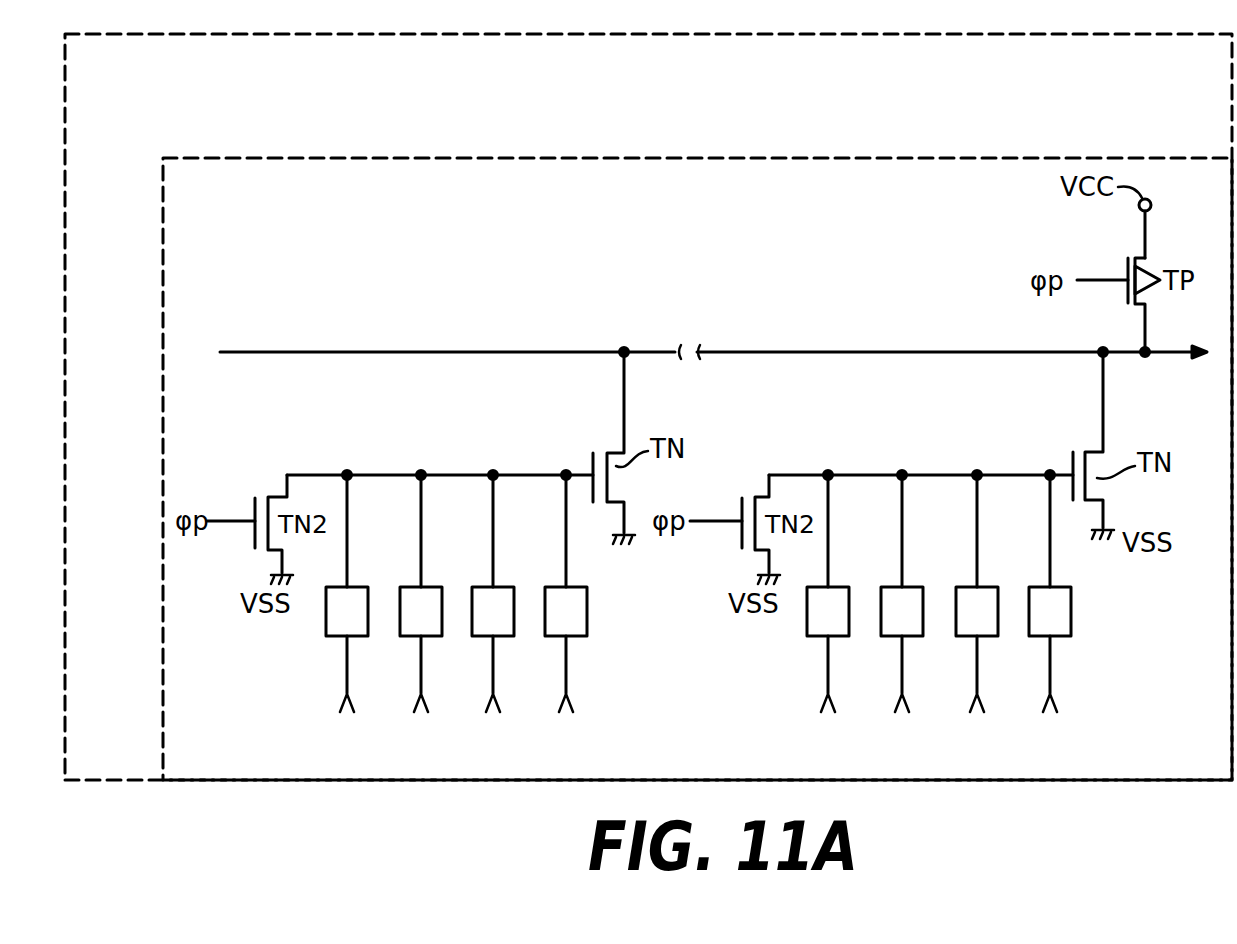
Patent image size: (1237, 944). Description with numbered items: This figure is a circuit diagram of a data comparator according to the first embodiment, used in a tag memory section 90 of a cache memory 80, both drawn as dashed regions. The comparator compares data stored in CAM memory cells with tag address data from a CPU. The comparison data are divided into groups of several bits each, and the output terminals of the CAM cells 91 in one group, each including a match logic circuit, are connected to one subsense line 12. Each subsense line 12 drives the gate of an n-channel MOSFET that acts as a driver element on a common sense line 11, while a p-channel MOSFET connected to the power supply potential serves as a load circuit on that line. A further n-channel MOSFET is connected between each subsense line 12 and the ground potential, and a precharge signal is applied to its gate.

The match line 11 is at (830, 352).
The subsense line 12 is at (447, 475).
The cache memory 80 is at (113, 760).
The tag memory section 90 is at (208, 760).
The CAM cell 91 is at (341, 621).